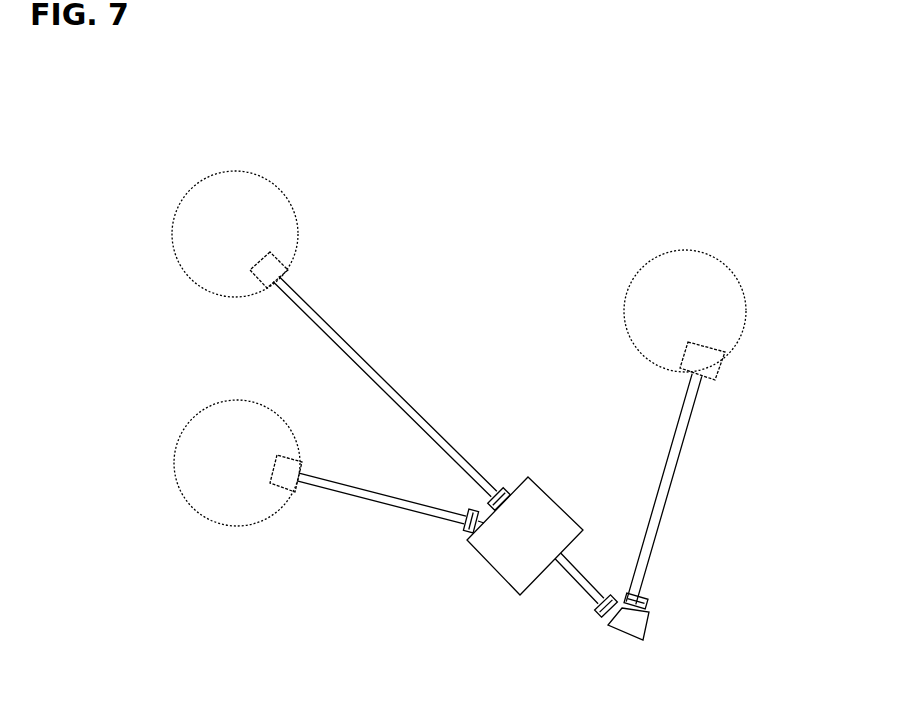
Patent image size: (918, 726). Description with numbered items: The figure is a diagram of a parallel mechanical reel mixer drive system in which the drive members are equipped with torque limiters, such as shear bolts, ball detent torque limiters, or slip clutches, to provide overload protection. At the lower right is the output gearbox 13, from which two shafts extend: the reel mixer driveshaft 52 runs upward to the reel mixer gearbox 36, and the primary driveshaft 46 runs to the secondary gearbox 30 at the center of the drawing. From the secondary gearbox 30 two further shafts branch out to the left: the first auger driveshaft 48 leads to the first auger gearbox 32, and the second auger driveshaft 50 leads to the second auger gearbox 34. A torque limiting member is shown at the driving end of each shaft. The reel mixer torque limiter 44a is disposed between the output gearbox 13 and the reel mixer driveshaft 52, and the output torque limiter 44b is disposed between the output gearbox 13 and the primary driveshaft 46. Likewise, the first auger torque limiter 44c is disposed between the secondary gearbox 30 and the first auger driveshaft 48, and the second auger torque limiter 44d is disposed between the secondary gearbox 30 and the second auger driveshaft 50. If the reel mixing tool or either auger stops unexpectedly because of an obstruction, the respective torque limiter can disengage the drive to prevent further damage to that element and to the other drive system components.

The output gearbox 13 is at (642, 638).
The secondary gearbox 30 is at (562, 507).
The first auger gearbox 32 is at (303, 460).
The second auger gearbox 34 is at (291, 269).
The reel mixer gearbox 36 is at (725, 368).
The reel mixer torque limiter 44a is at (647, 603).
The output torque limiter 44b is at (602, 625).
The first auger torque limiter 44c is at (462, 535).
The second auger torque limiter 44d is at (505, 486).
The primary driveshaft 46 is at (573, 590).
The first auger driveshaft 48 is at (372, 502).
The second auger driveshaft 50 is at (380, 372).
The reel mixer driveshaft 52 is at (663, 503).